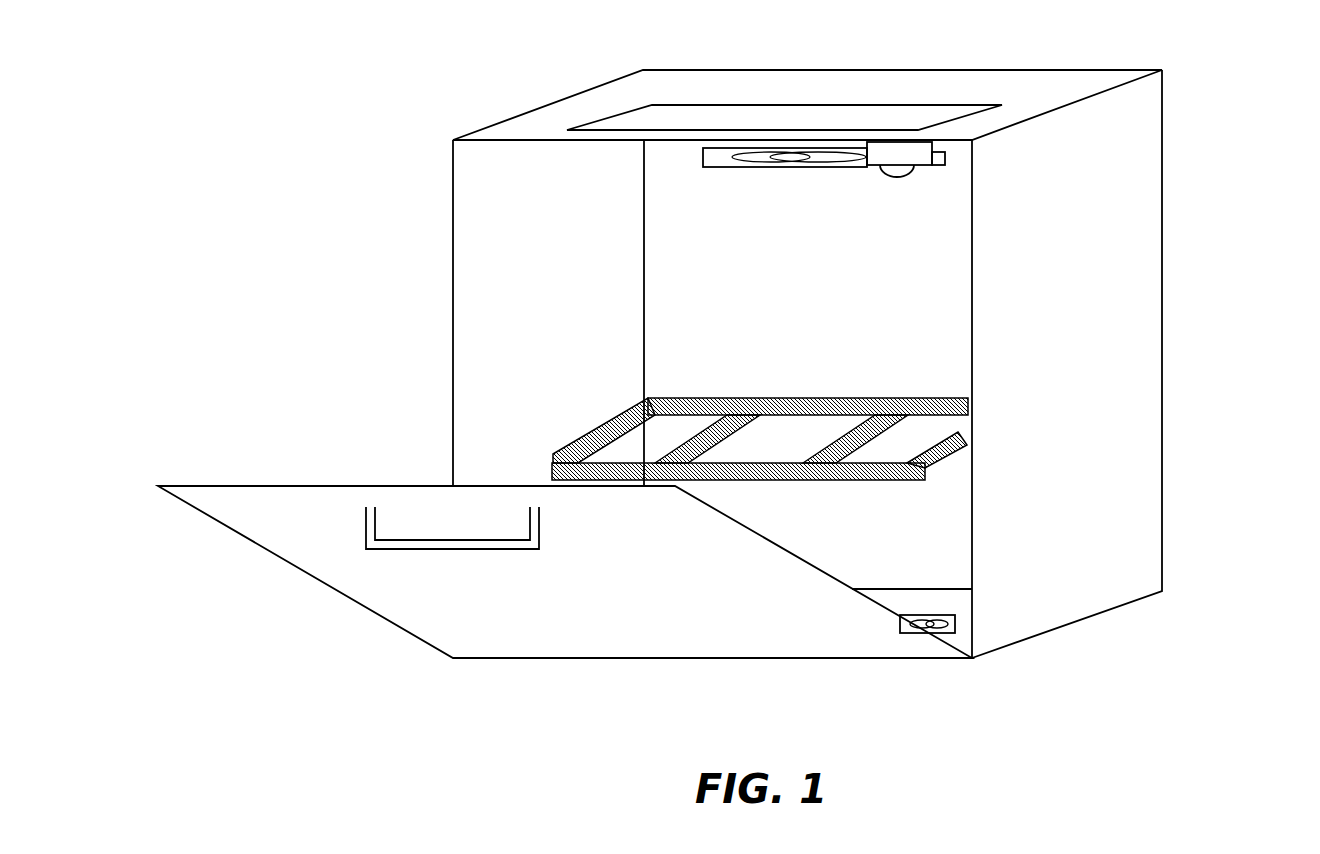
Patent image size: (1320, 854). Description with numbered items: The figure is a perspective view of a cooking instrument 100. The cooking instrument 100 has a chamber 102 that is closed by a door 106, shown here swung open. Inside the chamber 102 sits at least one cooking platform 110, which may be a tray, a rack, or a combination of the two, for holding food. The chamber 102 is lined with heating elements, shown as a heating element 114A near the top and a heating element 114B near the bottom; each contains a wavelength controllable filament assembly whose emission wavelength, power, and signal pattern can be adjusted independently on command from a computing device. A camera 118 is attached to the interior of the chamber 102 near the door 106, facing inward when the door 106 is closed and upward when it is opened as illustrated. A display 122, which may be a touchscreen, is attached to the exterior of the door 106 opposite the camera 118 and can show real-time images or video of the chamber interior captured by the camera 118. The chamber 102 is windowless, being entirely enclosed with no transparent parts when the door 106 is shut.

The cooking instrument 100 is at (1193, 133).
The chamber 102 is at (462, 180).
The door 106 is at (263, 503).
The cooking platform 110 is at (887, 465).
The heating element 114A is at (810, 152).
The heating element 114B is at (947, 630).
The camera 118 is at (918, 153).
The display 122 is at (888, 120).